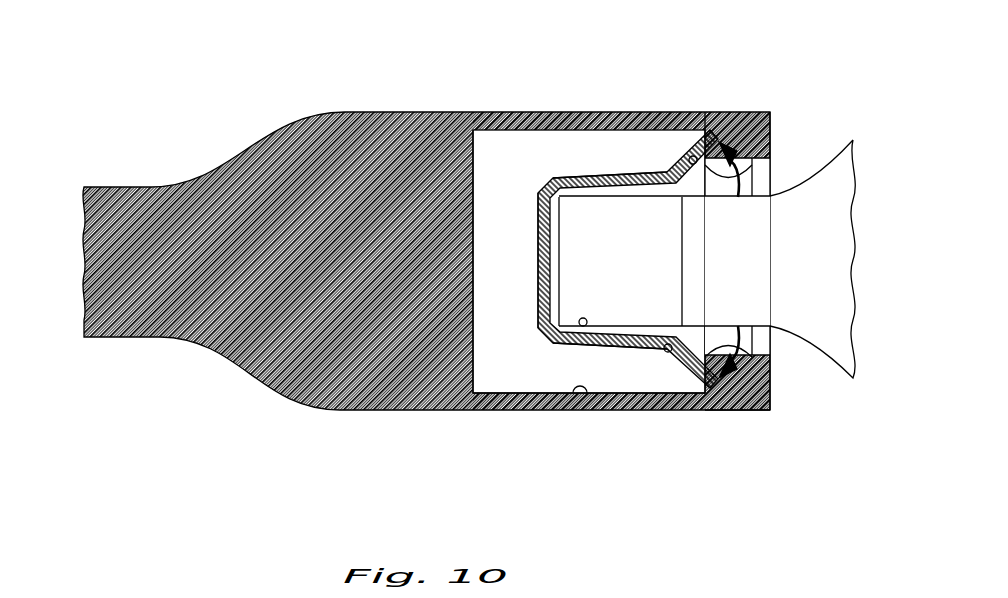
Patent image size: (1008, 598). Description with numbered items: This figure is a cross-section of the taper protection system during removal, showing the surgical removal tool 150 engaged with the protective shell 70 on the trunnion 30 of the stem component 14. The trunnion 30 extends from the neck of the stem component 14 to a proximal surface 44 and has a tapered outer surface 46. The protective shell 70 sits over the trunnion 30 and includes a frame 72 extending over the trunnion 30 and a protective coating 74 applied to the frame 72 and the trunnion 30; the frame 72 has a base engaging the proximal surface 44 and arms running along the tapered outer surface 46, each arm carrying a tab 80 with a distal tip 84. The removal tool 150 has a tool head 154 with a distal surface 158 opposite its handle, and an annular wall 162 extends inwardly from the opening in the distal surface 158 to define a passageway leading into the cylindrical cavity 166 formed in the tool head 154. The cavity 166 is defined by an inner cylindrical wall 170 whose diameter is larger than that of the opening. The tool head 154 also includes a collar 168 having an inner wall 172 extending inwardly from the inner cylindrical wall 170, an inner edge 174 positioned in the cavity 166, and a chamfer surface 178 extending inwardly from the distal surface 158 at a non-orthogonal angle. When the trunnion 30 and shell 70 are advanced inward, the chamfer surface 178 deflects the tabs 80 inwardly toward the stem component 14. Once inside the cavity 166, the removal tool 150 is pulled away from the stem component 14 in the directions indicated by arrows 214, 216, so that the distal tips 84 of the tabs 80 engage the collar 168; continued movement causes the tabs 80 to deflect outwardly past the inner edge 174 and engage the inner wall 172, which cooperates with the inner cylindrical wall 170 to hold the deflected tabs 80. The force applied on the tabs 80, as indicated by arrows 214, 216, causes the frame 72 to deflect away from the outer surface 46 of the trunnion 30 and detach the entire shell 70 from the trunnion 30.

The surgical removal tool 150 is at (155, 80).
The tool head 154 is at (362, 112).
The protective shell 70 is at (505, 178).
The cylindrical cavity 166 is at (505, 375).
The inner cylindrical wall 170 is at (580, 400).
The inner edge 174 is at (678, 404).
The inner wall 172 is at (742, 412).
The collar 168 is at (755, 116).
The chamfer surface 178 is at (772, 165).
The distal surface 158 is at (765, 402).
The annular wall 162 is at (774, 194).
The arrow 214 is at (776, 372).
The arrow 216 is at (716, 140).
The distal tip 84 is at (722, 136).
The trunnion 30 is at (552, 329).
The frame 72 is at (572, 177).
The proximal surface 44 is at (541, 246).
The tapered outer surface 46 is at (583, 327).
The protective coating 74 is at (558, 270).
The tab 80 is at (690, 160).
The stem component 14 is at (838, 222).